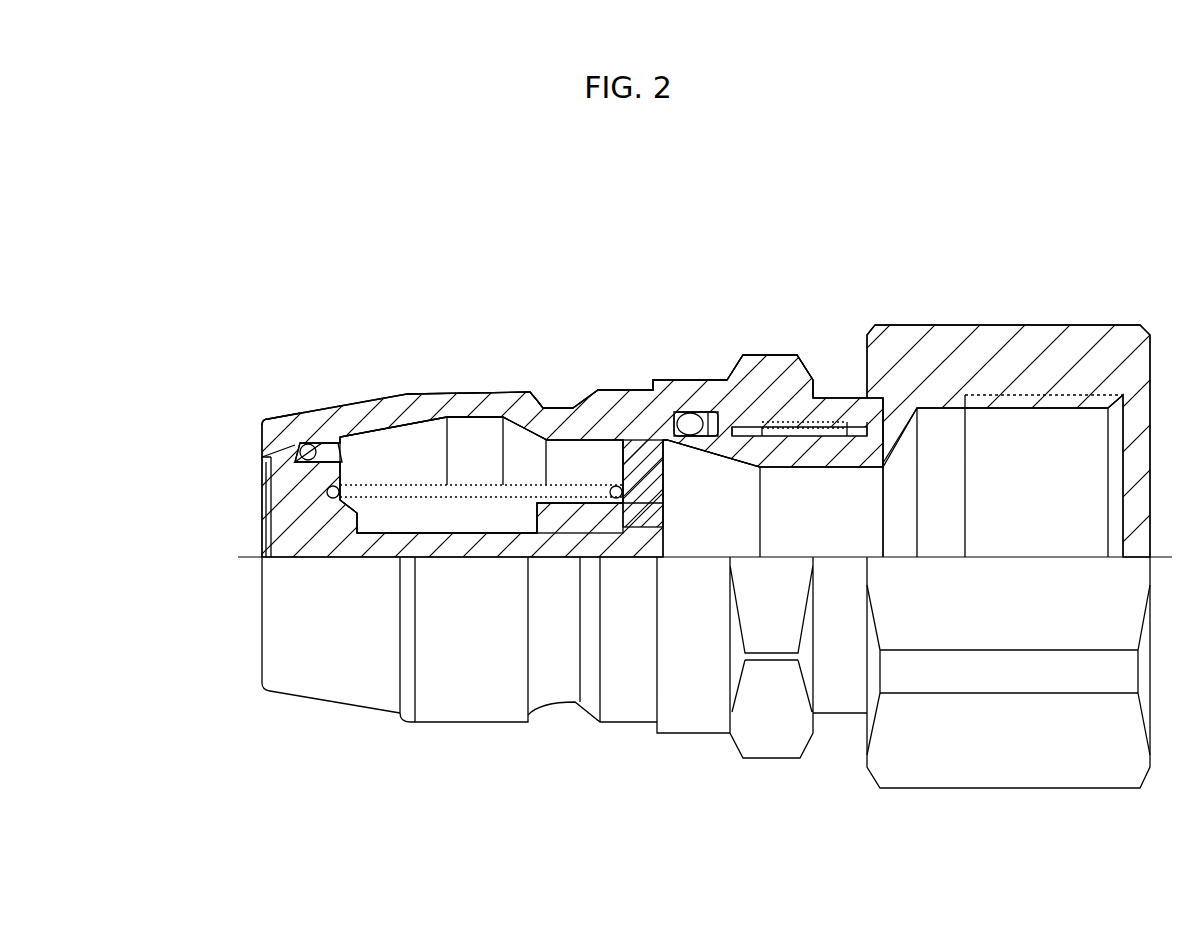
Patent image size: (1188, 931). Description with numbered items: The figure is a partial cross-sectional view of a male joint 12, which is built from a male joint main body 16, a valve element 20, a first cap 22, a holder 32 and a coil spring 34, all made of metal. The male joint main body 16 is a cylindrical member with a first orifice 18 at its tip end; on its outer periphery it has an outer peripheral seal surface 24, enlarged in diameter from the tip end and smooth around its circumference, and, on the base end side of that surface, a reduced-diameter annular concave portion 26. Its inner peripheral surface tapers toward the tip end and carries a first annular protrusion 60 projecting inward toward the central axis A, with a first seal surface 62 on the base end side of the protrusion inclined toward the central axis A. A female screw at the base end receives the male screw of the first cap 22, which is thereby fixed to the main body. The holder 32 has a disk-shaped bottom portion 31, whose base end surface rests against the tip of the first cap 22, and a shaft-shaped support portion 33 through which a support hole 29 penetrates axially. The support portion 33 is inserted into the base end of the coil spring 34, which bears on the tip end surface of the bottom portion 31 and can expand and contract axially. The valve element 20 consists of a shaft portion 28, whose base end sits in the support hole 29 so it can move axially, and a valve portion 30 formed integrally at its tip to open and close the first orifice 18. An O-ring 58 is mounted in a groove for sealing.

The male joint 12 is at (898, 243).
The male joint main body 16 is at (770, 373).
The first orifice 18 is at (260, 516).
The valve element 20 is at (260, 463).
The first cap 22 is at (1035, 345).
The outer peripheral seal surface 24 is at (463, 390).
The annular concave portion 26 is at (570, 395).
The shaft portion 28 is at (443, 545).
The support hole 29 is at (641, 543).
The valve portion 30 is at (327, 543).
The bottom portion 31 is at (690, 412).
The holder 32 is at (635, 462).
The support portion 33 is at (588, 522).
The coil spring 34 is at (405, 483).
The O-ring 58 is at (312, 430).
The first annular protrusion 60 is at (272, 493).
The first seal surface 62 is at (338, 447).
The central axis A is at (283, 552).